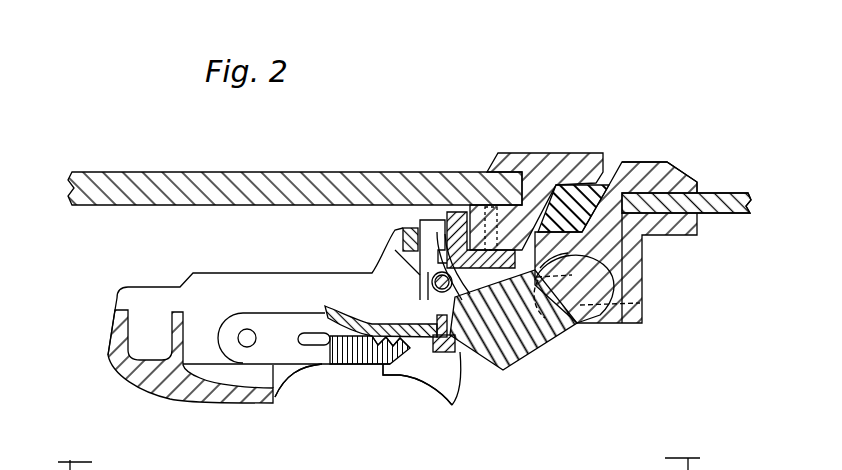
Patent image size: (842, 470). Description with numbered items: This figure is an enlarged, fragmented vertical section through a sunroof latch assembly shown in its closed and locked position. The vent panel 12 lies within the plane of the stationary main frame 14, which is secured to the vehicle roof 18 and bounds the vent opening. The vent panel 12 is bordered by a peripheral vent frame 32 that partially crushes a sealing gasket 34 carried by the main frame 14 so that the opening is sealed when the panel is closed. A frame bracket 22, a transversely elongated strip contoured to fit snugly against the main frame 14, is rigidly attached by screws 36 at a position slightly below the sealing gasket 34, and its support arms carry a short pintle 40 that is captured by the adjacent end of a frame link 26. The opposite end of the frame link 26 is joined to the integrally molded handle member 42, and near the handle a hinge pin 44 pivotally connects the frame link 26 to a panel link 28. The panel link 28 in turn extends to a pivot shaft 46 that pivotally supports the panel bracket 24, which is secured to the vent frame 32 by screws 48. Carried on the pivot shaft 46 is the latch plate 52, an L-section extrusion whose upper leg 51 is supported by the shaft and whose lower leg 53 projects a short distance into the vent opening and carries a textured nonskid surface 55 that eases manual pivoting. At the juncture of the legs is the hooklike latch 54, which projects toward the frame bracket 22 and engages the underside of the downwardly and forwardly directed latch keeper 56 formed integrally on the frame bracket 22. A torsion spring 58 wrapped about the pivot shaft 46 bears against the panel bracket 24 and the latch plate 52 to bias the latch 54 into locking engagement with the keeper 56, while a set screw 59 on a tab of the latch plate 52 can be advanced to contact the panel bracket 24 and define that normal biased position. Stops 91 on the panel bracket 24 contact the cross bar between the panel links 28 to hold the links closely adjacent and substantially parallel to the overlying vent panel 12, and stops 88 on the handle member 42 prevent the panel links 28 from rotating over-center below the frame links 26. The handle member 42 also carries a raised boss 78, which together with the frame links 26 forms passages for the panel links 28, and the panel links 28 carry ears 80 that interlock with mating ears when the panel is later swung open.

The vent panel 12 is at (130, 178).
The main frame 14 is at (675, 180).
The roof 18 is at (722, 196).
The frame bracket 22 is at (545, 348).
The panel bracket 24 is at (452, 212).
The frame links 26 is at (262, 334).
The panel links 28 is at (352, 372).
The vent frame 32 is at (552, 160).
The sealing gasket 34 is at (612, 180).
The screws 36 is at (628, 300).
The pintle 40 is at (565, 275).
The handle member 42 is at (172, 398).
The hinge pins 44 is at (246, 332).
The pivot shaft 46 is at (437, 266).
The screws 48 is at (510, 172).
The upper leg 51 is at (405, 236).
The latch plate 52 is at (332, 303).
The lower leg 53 is at (385, 366).
The latch 54 is at (455, 382).
The textured nonskid surface 55 is at (342, 358).
The latch keeper 56 is at (505, 367).
The torsion spring 58 is at (433, 284).
The set screw 59 is at (548, 265).
The raised boss 78 is at (115, 326).
The ears 80 is at (315, 312).
The stops 88 is at (235, 398).
The stops 91 is at (440, 230).